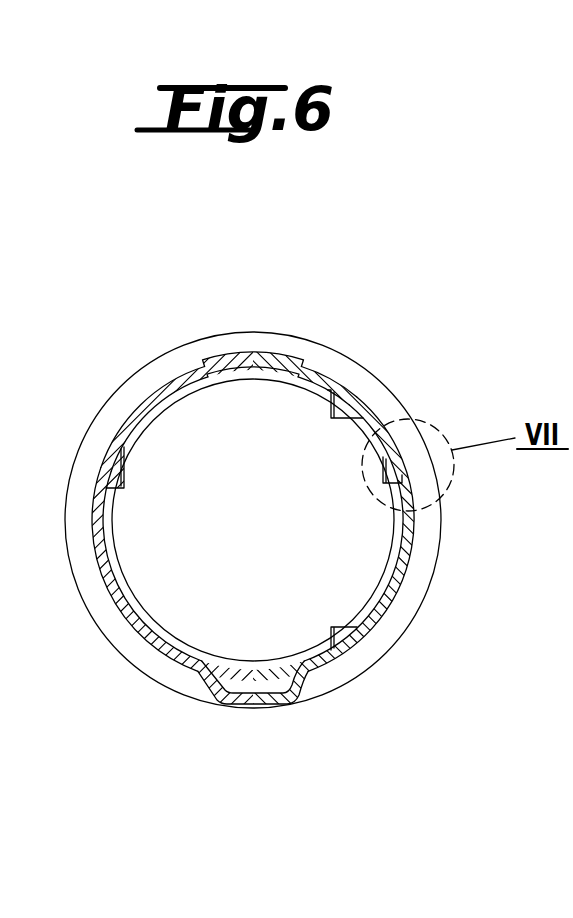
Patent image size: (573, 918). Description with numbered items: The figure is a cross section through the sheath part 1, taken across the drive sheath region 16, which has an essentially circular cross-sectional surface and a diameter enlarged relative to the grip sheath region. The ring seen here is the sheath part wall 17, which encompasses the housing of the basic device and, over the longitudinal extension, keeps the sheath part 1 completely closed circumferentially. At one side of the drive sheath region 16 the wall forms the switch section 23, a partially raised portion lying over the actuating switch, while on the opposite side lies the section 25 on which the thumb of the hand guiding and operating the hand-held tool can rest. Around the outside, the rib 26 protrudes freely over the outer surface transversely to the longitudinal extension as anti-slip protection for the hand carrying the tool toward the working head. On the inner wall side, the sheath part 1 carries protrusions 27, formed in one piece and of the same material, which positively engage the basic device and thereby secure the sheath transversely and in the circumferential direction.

The sheath part 1 is at (330, 312).
The drive sheath region 16 is at (323, 373).
The sheath part wall 17 is at (398, 598).
The switch section 23 is at (238, 698).
The section 25 is at (235, 352).
The rib 26 is at (425, 568).
The protrusion 27 is at (342, 408).